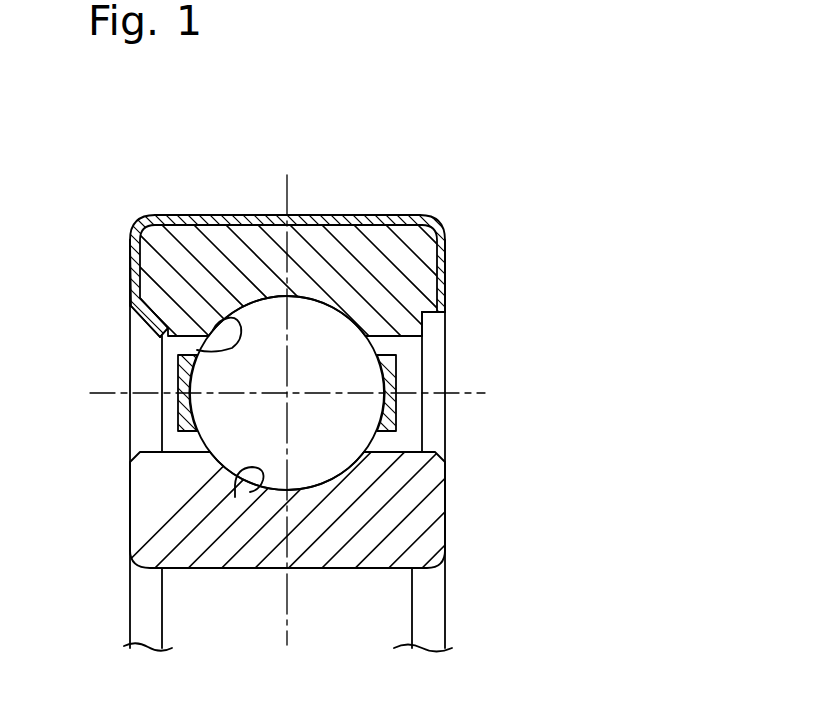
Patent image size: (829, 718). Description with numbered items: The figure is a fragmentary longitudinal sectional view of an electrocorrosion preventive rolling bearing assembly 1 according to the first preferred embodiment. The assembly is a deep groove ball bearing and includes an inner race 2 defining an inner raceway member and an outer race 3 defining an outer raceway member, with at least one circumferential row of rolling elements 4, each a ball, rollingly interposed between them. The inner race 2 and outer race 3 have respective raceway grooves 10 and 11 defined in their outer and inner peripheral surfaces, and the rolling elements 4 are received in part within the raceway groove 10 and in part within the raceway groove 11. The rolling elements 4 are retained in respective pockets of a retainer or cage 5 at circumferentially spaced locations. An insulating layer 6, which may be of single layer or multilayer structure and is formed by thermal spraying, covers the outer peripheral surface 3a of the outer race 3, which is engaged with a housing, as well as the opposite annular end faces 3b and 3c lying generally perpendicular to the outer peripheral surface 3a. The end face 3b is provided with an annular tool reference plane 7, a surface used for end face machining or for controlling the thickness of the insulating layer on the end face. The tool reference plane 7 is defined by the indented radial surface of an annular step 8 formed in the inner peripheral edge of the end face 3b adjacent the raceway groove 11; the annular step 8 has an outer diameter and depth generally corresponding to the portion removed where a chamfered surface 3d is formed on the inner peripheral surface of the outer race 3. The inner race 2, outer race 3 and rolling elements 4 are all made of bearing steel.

The electrocorrosion preventive rolling bearing assembly 1 is at (187, 203).
The inner race 2 is at (415, 540).
The outer race 3 is at (368, 240).
The outer peripheral surface 3a is at (244, 215).
The annular end face 3b is at (447, 283).
The annular end face 3c is at (128, 270).
The chamfered surface 3d is at (140, 325).
The rolling elements 4 is at (347, 437).
The retainer or cage 5 is at (395, 408).
The insulating layer 6 is at (345, 222).
The annular tool reference plane 7 is at (427, 336).
The annular step 8 is at (432, 322).
The raceway groove 10 is at (235, 497).
The raceway groove 11 is at (197, 350).